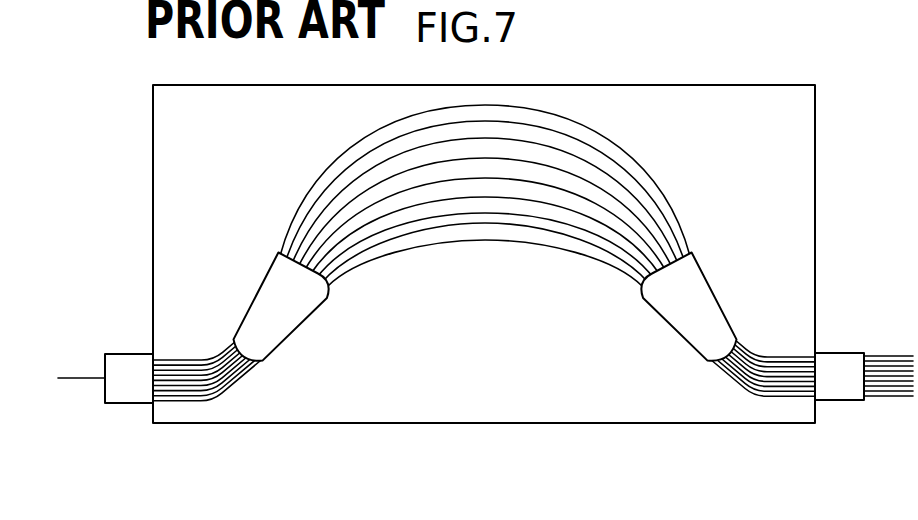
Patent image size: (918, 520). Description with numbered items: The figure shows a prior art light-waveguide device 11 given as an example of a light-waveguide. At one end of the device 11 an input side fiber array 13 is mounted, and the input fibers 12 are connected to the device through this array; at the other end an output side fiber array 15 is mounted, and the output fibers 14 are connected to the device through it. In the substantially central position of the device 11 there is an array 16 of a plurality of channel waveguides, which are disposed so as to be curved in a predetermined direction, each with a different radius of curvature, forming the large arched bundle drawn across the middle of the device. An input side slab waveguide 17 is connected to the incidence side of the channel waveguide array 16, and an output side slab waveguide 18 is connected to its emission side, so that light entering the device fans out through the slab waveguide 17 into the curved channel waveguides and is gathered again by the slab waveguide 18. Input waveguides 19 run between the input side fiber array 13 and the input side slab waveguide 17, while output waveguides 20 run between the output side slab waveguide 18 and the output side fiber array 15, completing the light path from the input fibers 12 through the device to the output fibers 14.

The light-waveguide device 11 is at (766, 80).
The input fibers 12 is at (84, 377).
The input side fiber array 13 is at (128, 355).
The output fibers 14 is at (885, 356).
The output side fiber array 15 is at (843, 353).
The channel waveguide array 16 is at (664, 190).
The input side slab waveguide 17 is at (250, 306).
The output side slab waveguide 18 is at (715, 298).
The input waveguides 19 is at (185, 359).
The output waveguides 20 is at (775, 356).